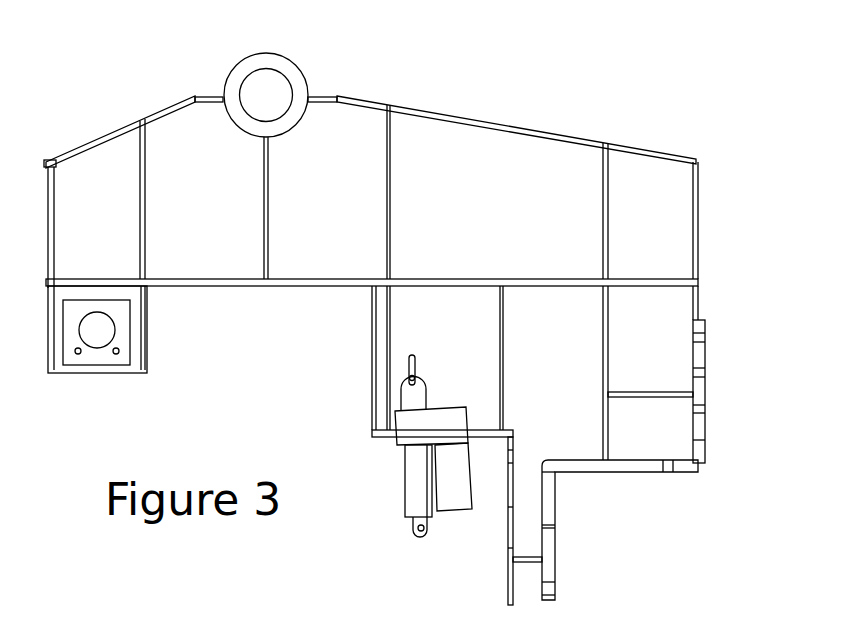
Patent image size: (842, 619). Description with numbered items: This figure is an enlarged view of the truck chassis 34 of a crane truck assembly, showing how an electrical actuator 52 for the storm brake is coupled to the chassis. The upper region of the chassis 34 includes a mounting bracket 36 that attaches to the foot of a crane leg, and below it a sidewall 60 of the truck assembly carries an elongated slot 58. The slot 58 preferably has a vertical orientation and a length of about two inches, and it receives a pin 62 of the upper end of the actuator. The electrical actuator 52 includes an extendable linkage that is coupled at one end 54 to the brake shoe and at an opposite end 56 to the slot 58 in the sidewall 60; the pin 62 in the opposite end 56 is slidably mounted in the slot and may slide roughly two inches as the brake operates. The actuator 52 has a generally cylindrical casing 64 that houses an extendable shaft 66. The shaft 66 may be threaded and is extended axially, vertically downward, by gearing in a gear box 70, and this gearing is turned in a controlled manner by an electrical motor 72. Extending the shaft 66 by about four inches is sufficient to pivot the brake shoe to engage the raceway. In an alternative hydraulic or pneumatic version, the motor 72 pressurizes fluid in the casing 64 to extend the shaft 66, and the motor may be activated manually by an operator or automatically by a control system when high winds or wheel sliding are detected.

The chassis 34 is at (479, 218).
The mounting bracket 36 is at (298, 64).
The electrical actuator 52 is at (384, 451).
The end of extendable linkage 54 is at (423, 535).
The opposite end of electrical actuator 56 is at (423, 376).
The elongated slot 58 is at (412, 356).
The sidewall 60 is at (454, 316).
The pin 62 is at (413, 368).
The cylindrical casing 64 is at (405, 478).
The extendable shaft 66 is at (430, 520).
The gear box 70 is at (402, 424).
The electrical motor 72 is at (441, 485).